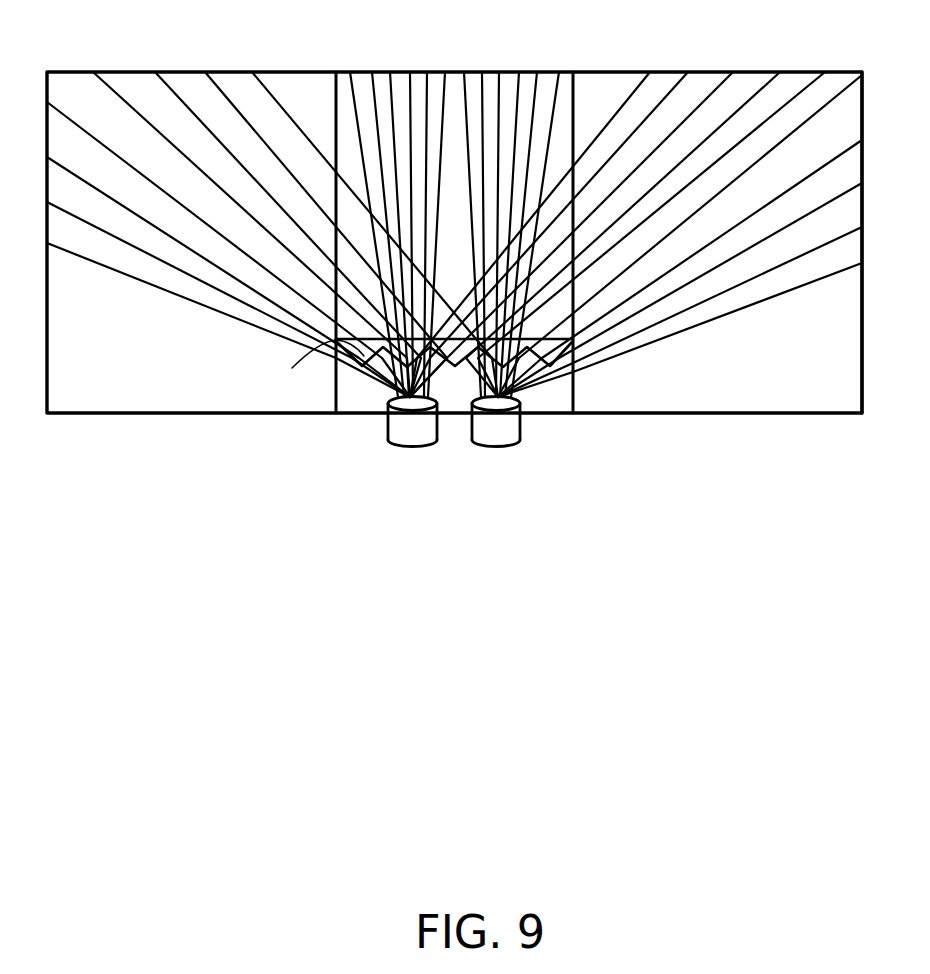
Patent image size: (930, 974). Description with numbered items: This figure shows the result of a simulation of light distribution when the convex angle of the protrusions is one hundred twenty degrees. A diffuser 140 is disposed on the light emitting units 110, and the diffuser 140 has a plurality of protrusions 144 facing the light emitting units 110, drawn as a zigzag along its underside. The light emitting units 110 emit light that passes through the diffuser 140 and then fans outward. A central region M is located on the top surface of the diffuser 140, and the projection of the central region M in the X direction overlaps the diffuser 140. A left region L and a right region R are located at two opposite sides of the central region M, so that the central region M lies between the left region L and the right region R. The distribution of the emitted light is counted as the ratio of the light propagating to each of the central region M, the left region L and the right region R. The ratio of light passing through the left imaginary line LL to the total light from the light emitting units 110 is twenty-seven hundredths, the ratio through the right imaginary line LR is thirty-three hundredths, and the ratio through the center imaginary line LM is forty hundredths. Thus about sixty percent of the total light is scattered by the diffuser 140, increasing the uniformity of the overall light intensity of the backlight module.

The light emitting units 110 is at (497, 432).
The diffuser 140 is at (510, 409).
The protrusions 144 is at (546, 352).
The left region L is at (253, 220).
The central region M is at (510, 220).
The right region R is at (791, 220).
The left imaginary line LL is at (175, 300).
The center imaginary line LM is at (561, 87).
The right imaginary line LR is at (766, 300).